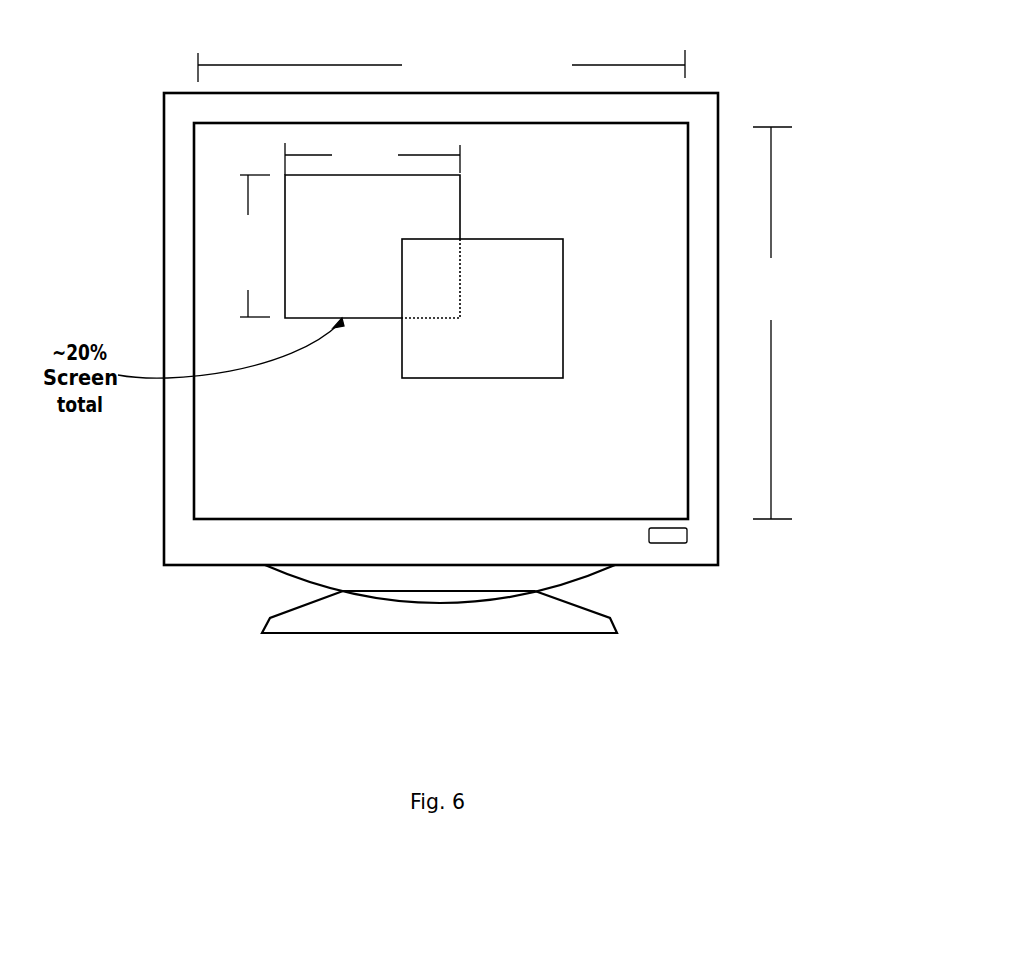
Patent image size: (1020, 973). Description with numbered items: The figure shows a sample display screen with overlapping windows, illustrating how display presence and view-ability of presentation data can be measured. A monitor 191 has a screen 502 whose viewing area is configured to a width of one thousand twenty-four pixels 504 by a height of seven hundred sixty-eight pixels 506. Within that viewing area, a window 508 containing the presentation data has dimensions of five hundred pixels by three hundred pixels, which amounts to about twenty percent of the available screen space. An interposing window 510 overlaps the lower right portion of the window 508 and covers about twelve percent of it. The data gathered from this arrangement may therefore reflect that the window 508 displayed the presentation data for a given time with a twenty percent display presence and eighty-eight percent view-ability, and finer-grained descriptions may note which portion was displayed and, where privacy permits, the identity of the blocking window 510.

The monitor 191 is at (719, 632).
The screen 502 is at (215, 518).
The viewing area width of 1024 pixels 504 is at (283, 65).
The viewing area height of 768 pixels 506 is at (773, 358).
The window 508 is at (303, 222).
The interposing window 510 is at (540, 319).